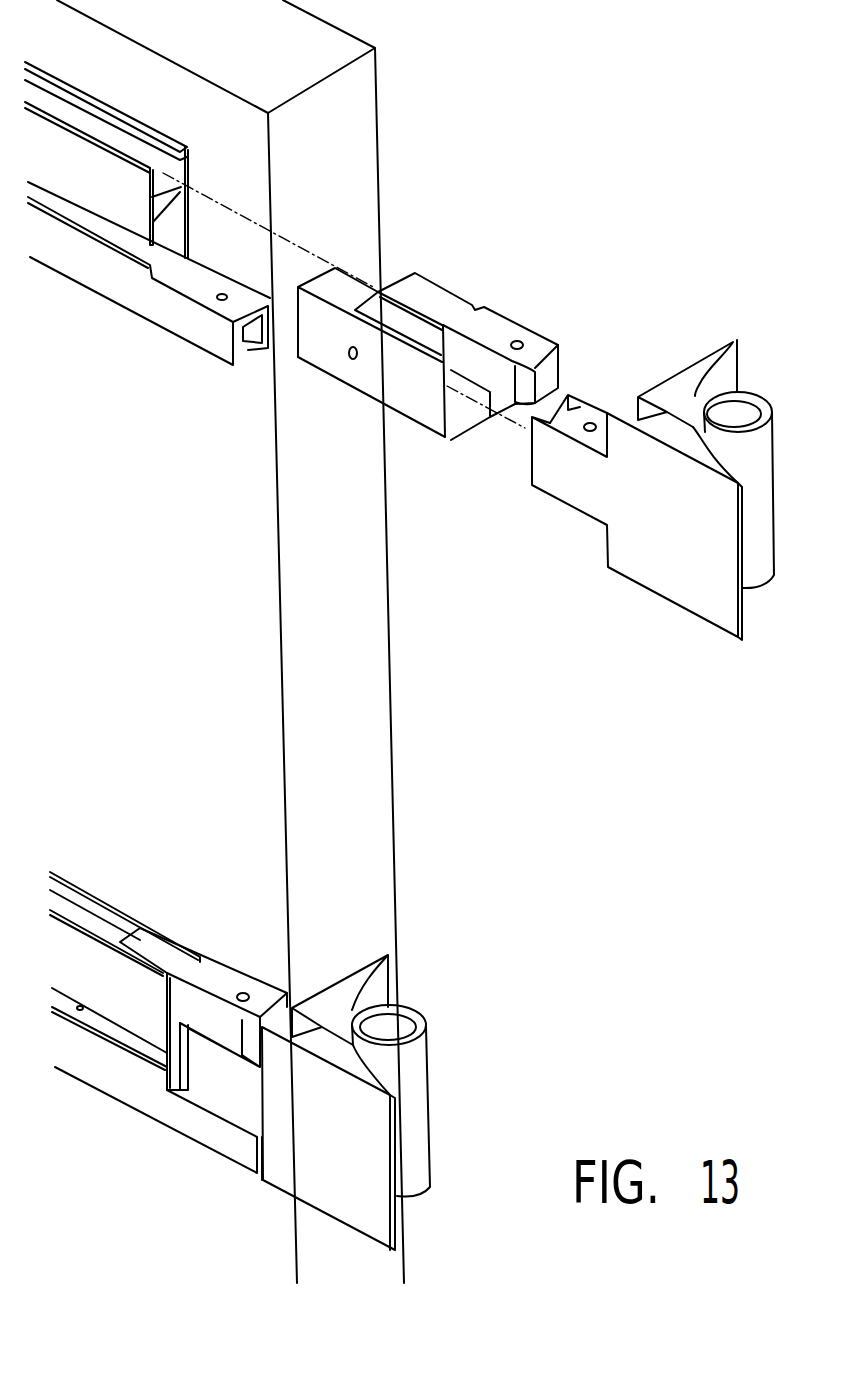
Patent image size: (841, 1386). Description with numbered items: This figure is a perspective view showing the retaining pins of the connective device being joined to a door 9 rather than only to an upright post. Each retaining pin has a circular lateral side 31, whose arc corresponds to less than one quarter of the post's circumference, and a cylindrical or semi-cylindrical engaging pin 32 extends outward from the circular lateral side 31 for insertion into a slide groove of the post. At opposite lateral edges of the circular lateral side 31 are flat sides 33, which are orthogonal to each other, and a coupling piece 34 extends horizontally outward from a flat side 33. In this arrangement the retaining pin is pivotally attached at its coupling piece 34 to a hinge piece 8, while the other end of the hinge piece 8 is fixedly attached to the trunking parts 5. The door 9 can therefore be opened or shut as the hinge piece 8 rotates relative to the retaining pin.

The trunking part 5 is at (170, 260).
The hinge piece 8 is at (484, 320).
The door 9 is at (373, 693).
The circular lateral side 31 is at (709, 448).
The engaging pin 32 is at (758, 568).
The flat side 33 is at (633, 532).
The coupling piece 34 is at (557, 483).